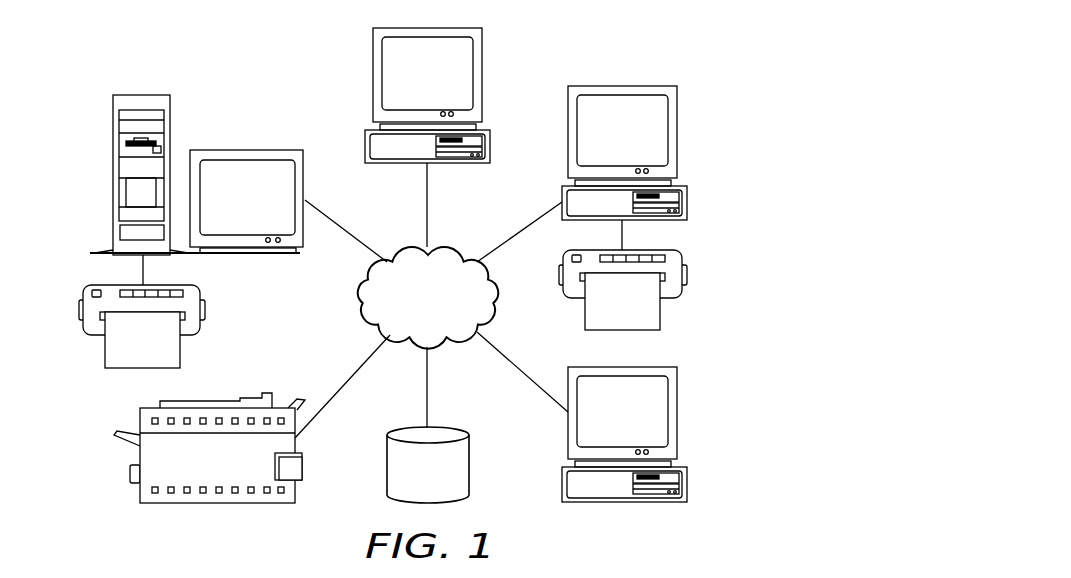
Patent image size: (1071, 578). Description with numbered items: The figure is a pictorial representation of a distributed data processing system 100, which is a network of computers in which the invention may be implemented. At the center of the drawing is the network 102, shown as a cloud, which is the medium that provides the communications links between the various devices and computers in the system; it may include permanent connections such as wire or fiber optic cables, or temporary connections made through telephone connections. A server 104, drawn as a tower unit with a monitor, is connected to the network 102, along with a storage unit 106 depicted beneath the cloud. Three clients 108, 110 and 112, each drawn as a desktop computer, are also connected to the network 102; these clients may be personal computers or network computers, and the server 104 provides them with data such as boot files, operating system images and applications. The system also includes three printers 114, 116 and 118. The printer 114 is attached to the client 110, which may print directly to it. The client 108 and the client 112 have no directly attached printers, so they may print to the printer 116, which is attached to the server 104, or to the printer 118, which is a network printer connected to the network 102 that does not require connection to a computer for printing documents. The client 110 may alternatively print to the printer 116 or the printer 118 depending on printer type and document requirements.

The distributed data processing system 100 is at (748, 89).
The network 102 is at (449, 309).
The server 104 is at (269, 207).
The storage unit 106 is at (449, 483).
The client 108 is at (449, 87).
The client 110 is at (645, 145).
The client 112 is at (644, 424).
The printer 114 is at (686, 288).
The printer 116 is at (205, 309).
The printer 118 is at (238, 474).